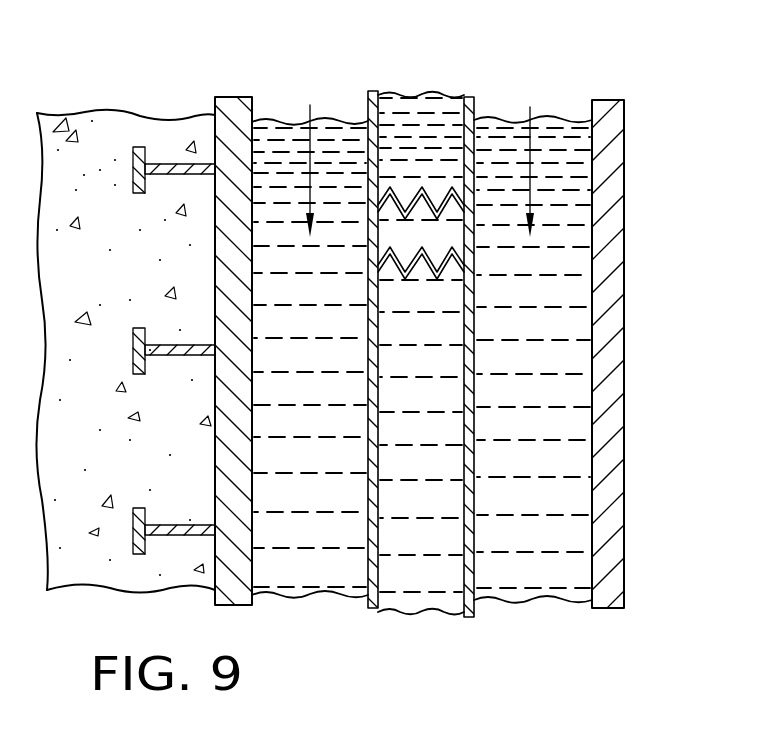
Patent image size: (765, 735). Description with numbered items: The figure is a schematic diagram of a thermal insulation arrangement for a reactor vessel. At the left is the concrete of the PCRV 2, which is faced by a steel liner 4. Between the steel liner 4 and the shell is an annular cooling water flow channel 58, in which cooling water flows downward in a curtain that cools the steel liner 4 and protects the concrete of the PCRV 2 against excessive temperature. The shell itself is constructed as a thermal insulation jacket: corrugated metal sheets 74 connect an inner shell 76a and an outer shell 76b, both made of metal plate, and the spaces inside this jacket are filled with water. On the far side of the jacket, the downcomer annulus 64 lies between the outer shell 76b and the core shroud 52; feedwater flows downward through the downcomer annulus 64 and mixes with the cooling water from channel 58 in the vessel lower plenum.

The PCRV 2 is at (72, 96).
The steel liner 4 is at (235, 105).
The core shroud 52 is at (614, 333).
The annular cooling water flow channel 58 is at (332, 467).
The downcomer annulus 64 is at (542, 467).
The corrugated metal sheets 74 is at (432, 190).
The inner shell 76a is at (368, 105).
The outer shell 76b is at (477, 103).